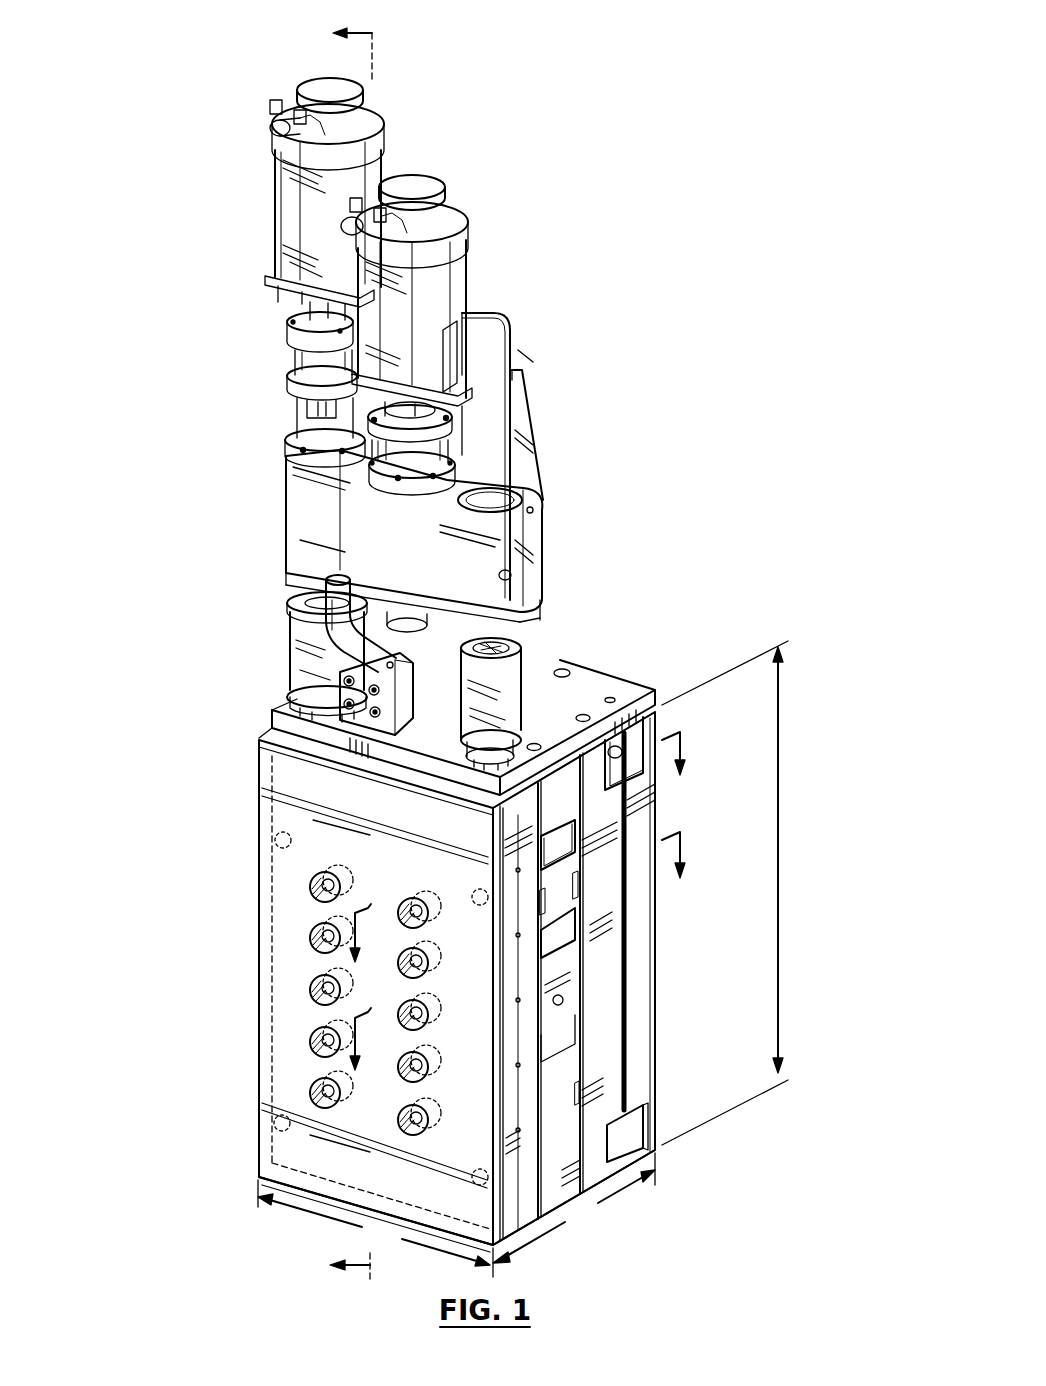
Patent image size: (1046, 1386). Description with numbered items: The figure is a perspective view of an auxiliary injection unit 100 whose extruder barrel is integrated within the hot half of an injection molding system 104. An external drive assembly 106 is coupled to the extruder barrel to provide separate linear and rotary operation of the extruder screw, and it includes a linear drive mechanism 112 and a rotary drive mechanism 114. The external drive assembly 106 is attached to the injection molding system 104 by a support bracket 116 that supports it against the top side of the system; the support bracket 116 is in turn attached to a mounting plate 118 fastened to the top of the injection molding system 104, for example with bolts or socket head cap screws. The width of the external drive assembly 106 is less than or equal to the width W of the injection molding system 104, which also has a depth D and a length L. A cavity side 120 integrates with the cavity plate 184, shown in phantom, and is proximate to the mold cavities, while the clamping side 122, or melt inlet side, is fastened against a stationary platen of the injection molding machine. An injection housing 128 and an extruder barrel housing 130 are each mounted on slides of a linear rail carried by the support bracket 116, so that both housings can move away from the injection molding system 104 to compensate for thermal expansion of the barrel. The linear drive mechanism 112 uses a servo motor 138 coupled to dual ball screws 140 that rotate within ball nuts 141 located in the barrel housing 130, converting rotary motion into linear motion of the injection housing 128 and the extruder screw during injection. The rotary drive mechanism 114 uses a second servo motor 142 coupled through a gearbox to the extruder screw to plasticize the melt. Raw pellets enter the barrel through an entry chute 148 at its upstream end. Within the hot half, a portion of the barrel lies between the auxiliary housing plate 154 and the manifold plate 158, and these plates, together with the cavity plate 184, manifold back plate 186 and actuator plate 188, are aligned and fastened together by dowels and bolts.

The auxiliary injection unit 100 is at (612, 165).
The injection molding system 104 is at (186, 897).
The external drive assembly 106 is at (152, 693).
The linear drive mechanism 112 is at (218, 563).
The rotary drive mechanism 114 is at (552, 216).
The support bracket 116 is at (522, 425).
The mounting plate 118 is at (277, 723).
The cavity side 120 is at (280, 1047).
The clamping side 122 is at (657, 813).
The injection housing 128 is at (320, 515).
The extruder barrel housing 130 is at (307, 637).
The servo motor 138 is at (373, 150).
The ball screws 140 is at (457, 638).
The ball nuts 141 is at (320, 597).
The second servo motor 142 is at (453, 288).
The entry chute 148 is at (320, 580).
The auxiliary housing plate 154 is at (518, 890).
The manifold plate 158 is at (563, 987).
The cavity plate 184 is at (493, 1177).
The manifold back plate 186 is at (610, 1025).
The actuator plate 188 is at (645, 1072).